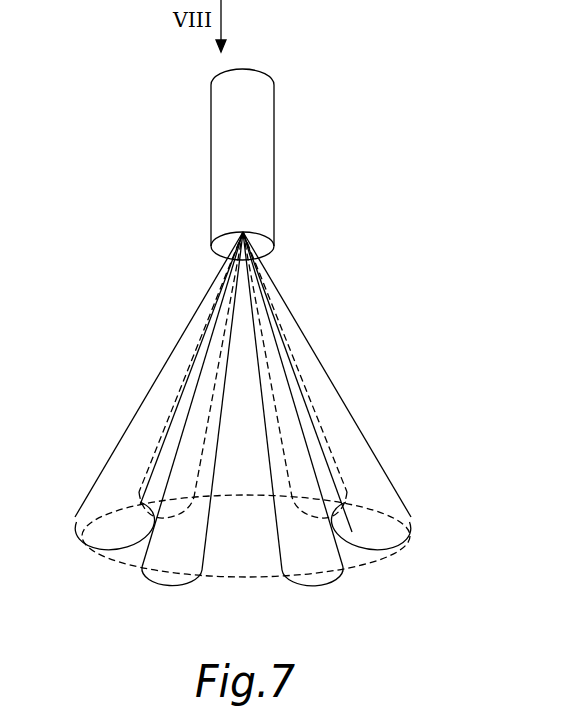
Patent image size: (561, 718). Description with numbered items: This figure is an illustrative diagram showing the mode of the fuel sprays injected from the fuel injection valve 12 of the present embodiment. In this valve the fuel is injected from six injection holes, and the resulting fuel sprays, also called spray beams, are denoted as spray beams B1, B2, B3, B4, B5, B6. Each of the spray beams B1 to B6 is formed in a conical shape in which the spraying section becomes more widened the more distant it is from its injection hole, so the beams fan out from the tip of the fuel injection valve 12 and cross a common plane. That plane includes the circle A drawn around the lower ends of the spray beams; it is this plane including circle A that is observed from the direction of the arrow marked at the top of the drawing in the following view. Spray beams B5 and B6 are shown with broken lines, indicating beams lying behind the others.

The fuel injection valve 12 is at (262, 163).
The circle A is at (363, 562).
The spray beam B1 is at (342, 394).
The spray beam B2 is at (293, 424).
The spray beam B3 is at (192, 424).
The spray beam B4 is at (142, 392).
The spray beam B5 is at (152, 458).
The spray beam B6 is at (331, 450).